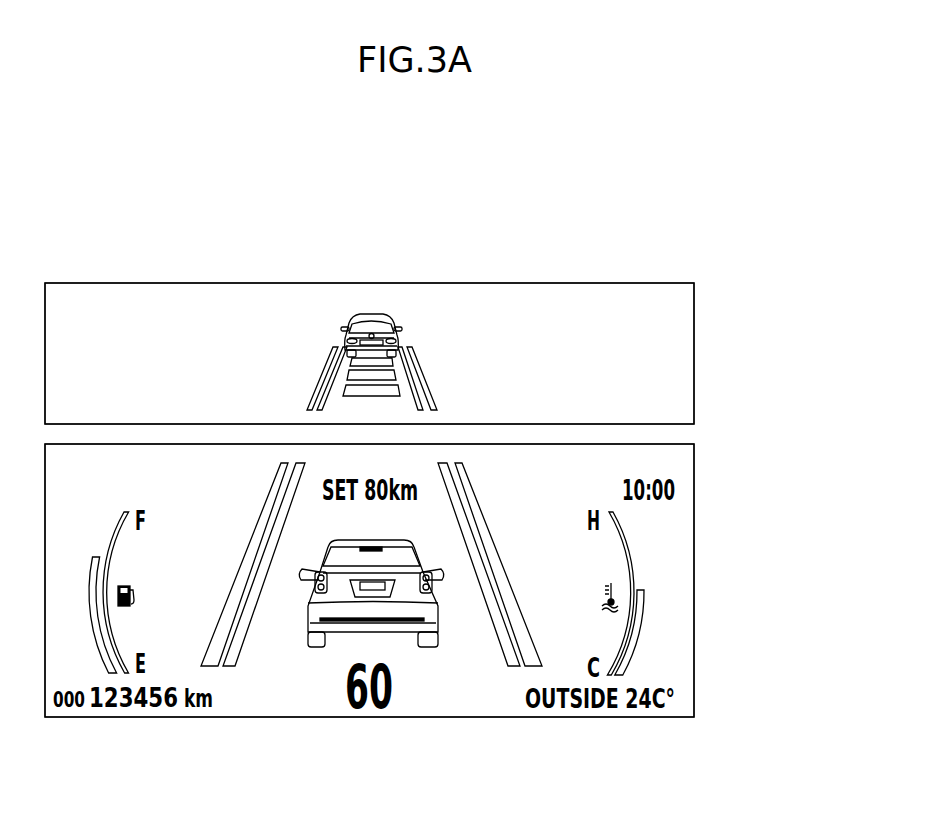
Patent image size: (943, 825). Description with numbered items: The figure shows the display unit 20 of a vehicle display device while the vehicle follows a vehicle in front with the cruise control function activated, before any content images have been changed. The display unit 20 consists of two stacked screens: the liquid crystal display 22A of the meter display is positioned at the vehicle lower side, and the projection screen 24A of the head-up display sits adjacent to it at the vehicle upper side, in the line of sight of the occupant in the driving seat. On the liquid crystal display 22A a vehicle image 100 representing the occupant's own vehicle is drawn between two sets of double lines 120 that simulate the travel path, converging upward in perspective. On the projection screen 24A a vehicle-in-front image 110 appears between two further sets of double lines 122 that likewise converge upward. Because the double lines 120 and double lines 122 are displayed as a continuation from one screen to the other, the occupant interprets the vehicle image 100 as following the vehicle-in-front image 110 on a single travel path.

The display unit 20 is at (723, 284).
The projection screen 24A is at (694, 357).
The liquid crystal display 22A is at (694, 583).
The vehicle-in-front image 110 is at (383, 325).
The double lines 122 is at (422, 375).
The double lines 120 is at (507, 652).
The vehicle image 100 is at (316, 614).